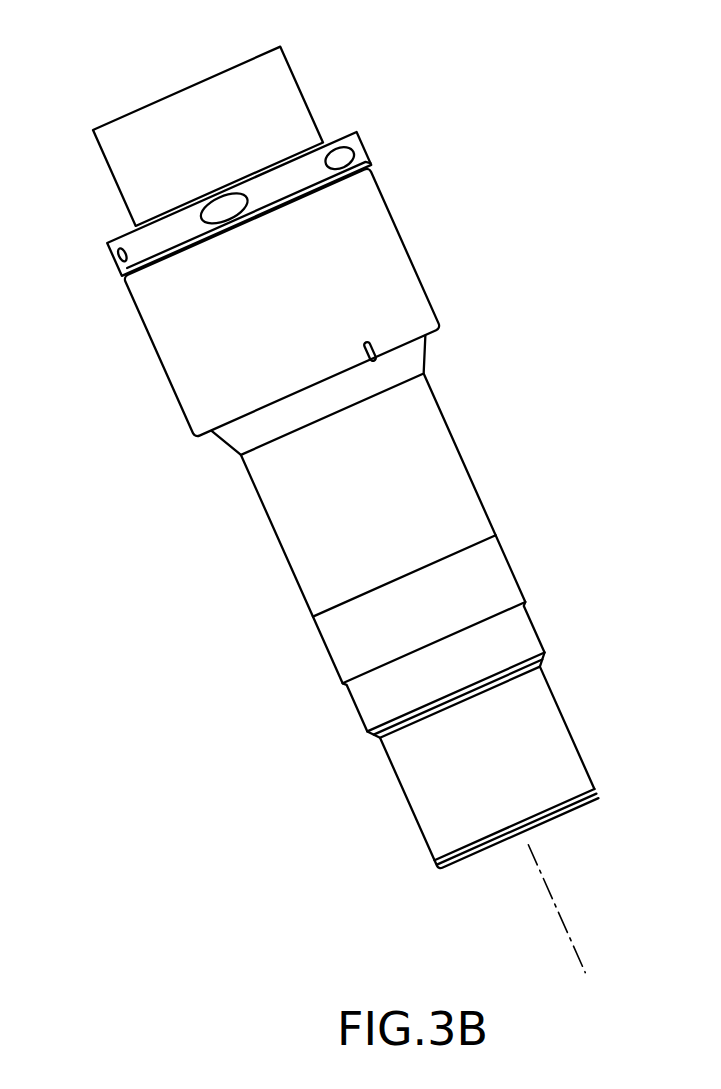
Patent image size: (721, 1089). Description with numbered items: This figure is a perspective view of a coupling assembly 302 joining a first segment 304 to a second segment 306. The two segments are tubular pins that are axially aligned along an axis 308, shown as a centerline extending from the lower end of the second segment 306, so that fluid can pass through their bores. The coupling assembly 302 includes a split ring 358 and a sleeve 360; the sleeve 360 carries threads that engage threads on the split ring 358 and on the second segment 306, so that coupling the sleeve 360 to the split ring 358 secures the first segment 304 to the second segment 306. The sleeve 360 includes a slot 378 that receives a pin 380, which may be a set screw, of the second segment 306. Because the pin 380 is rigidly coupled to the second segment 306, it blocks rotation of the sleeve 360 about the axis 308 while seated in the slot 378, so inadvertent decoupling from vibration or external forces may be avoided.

The coupling assembly 302 is at (341, 498).
The first segment 304 is at (267, 77).
The second segment 306 is at (455, 475).
The axis 308 is at (555, 905).
The split ring 358 is at (120, 268).
The sleeve 360 is at (425, 315).
The slot 378 is at (373, 336).
The pin 380 is at (382, 361).